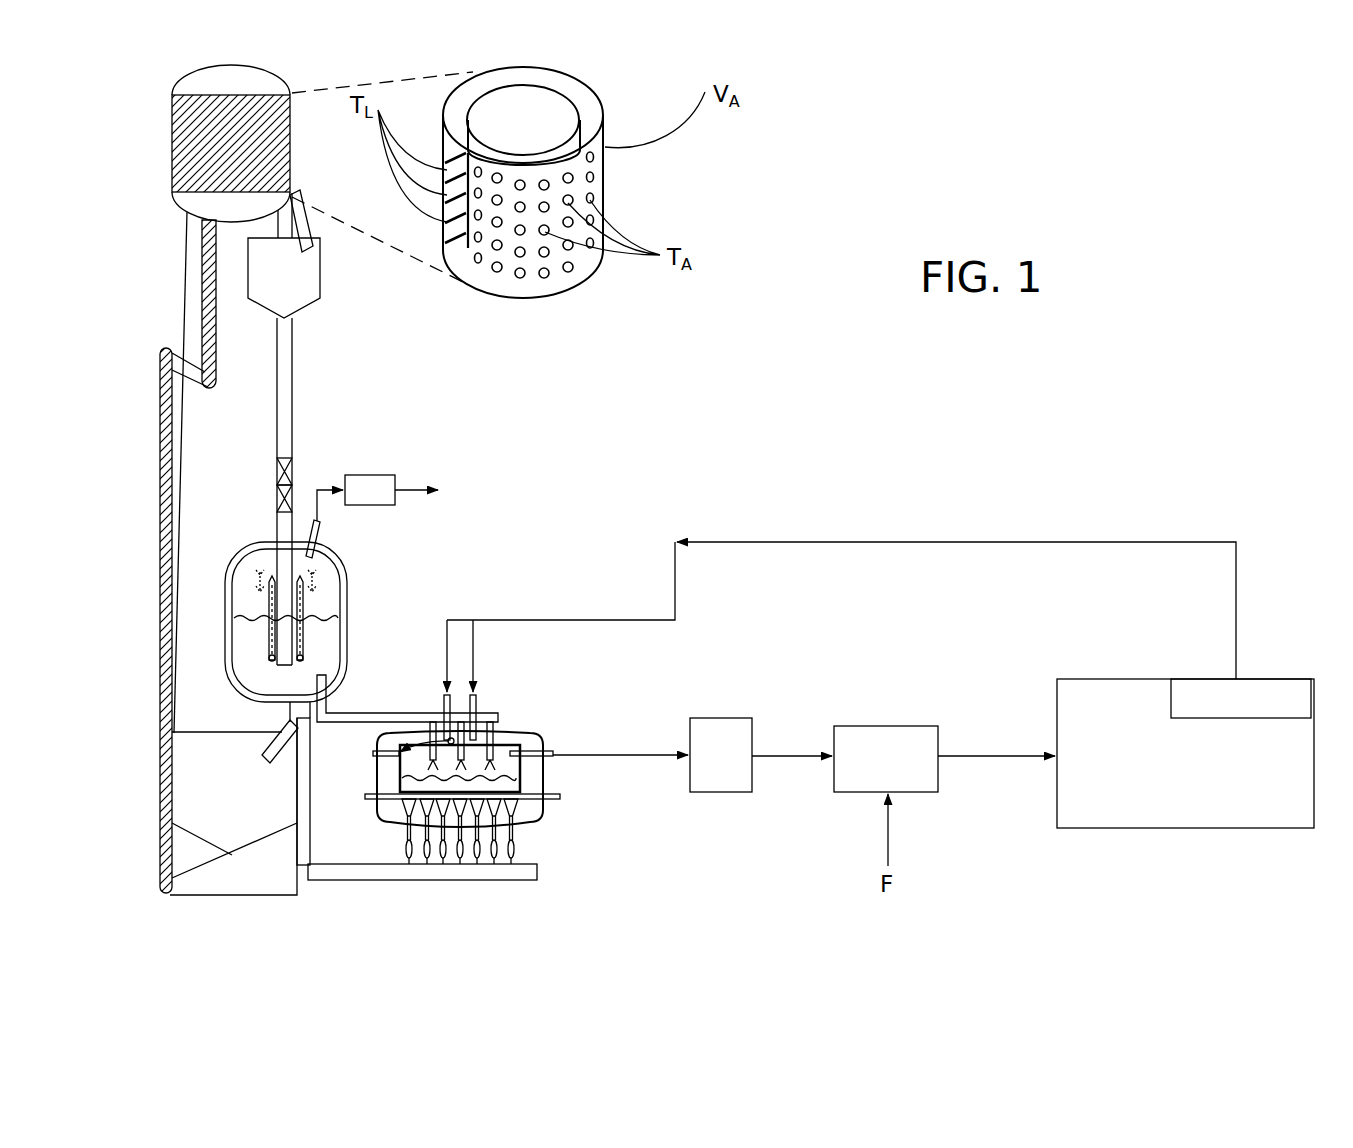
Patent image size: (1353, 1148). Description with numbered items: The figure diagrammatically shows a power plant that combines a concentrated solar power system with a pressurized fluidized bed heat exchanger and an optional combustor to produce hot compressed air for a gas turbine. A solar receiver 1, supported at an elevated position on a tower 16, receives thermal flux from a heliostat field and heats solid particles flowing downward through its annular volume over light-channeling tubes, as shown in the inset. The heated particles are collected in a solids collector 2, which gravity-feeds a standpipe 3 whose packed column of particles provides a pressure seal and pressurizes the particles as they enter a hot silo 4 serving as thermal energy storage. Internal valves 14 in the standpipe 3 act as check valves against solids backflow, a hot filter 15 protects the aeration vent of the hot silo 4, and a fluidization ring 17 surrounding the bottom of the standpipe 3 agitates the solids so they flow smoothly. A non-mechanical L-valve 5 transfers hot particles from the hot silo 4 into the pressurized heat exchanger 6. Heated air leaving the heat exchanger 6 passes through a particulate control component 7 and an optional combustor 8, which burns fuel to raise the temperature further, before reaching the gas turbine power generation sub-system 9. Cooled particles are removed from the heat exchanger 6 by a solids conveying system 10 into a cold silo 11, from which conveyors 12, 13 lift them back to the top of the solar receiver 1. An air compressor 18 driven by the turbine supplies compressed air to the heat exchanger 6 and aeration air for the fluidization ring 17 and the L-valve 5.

The solar receiver 1 is at (293, 163).
The solids collector 2 is at (337, 292).
The standpipe 3 is at (298, 412).
The hot silo 4 is at (348, 562).
The L-valve 5 is at (352, 712).
The pressurized heat exchanger 6 is at (368, 772).
The particulate control component 7 is at (731, 715).
The combustor 8 is at (874, 723).
The gas turbine power generation sub-system 9 is at (1182, 782).
The solids conveying system 10 is at (495, 873).
The cold silo 11 is at (243, 812).
The conveyor 12 is at (153, 592).
The conveyor 13 is at (182, 257).
The internal valves 14 is at (305, 475).
The hot filter 15 is at (377, 467).
The tower 16 is at (247, 484).
The fluidization ring 17 is at (305, 659).
The air compressor 18 is at (1288, 705).